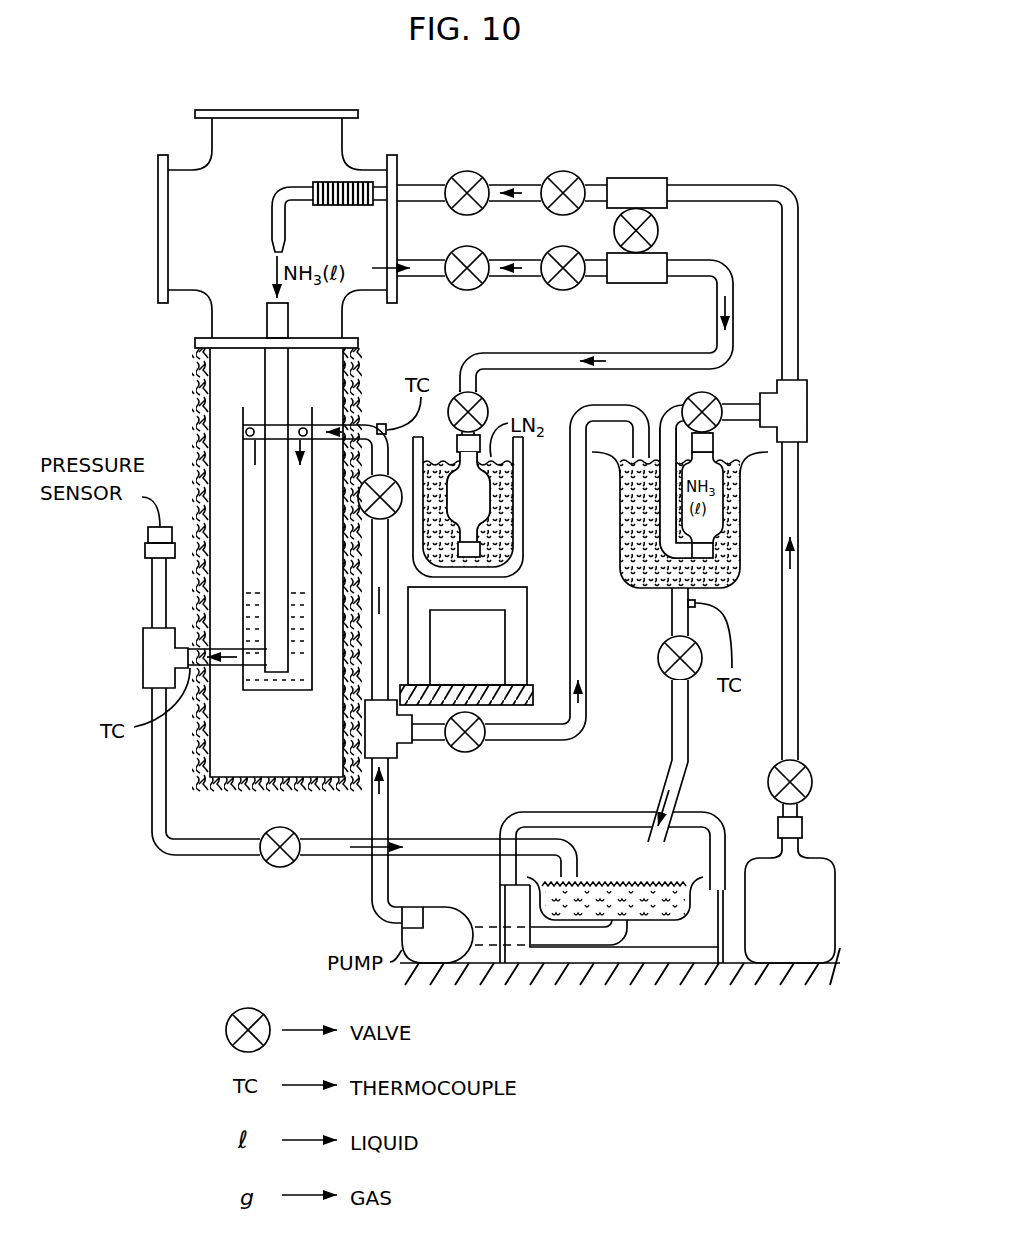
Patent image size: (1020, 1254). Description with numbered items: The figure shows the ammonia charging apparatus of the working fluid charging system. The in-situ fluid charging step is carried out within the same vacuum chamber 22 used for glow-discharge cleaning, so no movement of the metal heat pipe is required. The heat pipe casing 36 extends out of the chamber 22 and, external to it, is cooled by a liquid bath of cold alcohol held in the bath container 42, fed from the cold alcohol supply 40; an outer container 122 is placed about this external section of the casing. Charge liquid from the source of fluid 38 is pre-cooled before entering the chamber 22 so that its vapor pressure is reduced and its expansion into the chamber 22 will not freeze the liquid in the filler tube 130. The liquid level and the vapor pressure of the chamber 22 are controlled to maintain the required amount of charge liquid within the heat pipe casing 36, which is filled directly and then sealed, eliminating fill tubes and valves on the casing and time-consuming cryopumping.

The vacuum chamber 22 is at (343, 148).
The filler tube 130 is at (274, 200).
The outer container 122 is at (210, 412).
The heat pipe casing 36 is at (289, 404).
The bath container 42 is at (297, 692).
The source of fluid 38 is at (835, 892).
The cold alcohol supply 40 is at (641, 1016).